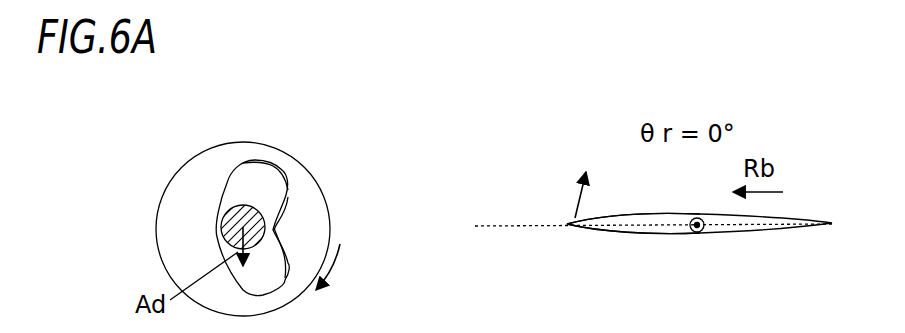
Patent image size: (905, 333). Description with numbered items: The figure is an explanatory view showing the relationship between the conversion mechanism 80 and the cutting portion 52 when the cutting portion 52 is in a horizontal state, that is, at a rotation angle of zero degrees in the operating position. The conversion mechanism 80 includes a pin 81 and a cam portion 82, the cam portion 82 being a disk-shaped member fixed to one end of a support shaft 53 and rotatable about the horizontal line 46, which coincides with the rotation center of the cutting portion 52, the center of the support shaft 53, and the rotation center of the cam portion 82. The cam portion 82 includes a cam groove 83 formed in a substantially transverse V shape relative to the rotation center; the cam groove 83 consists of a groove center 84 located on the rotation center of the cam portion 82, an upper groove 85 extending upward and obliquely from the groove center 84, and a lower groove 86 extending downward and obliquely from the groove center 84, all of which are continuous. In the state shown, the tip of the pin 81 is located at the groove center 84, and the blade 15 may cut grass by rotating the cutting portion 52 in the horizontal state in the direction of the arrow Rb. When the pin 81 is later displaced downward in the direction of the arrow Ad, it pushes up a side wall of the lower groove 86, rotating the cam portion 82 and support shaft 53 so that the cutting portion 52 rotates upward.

The conversion mechanism 80 is at (150, 160).
The cam portion 82 is at (215, 143).
The horizontal line 46 is at (244, 205).
The cam groove 83 is at (399, 128).
The upper groove 85 is at (288, 180).
The groove center 84 is at (276, 230).
The lower groove 86 is at (285, 262).
The pin 81 is at (221, 230).
The blade 15 is at (793, 230).
The cutting portion 52 is at (604, 233).
The support shaft 53 is at (672, 233).